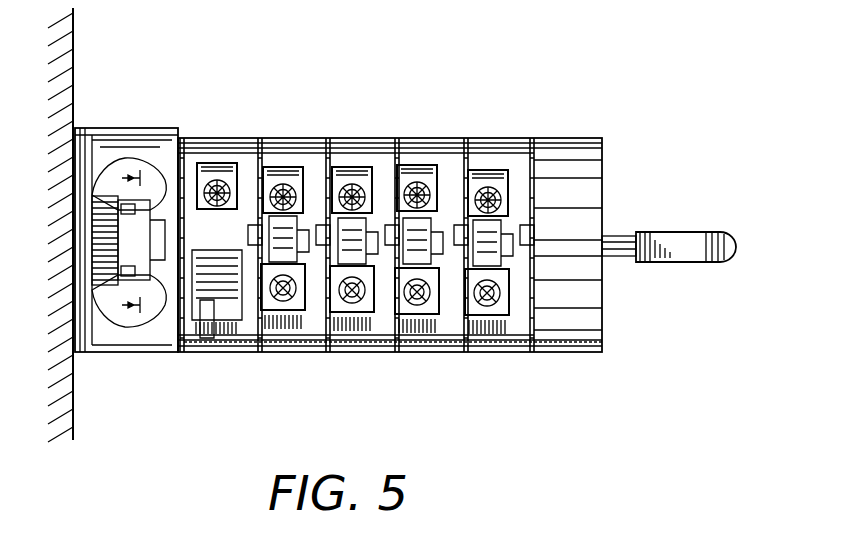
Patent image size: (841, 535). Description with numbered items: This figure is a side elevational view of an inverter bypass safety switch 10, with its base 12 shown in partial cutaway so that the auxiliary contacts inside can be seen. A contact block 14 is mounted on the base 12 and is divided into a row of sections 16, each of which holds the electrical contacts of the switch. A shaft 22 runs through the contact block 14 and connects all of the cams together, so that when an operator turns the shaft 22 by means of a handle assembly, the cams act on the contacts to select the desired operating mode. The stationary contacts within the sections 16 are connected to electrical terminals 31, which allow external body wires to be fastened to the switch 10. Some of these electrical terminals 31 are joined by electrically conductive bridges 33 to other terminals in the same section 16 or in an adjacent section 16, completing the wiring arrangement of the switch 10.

The inverter bypass safety switch 10 is at (332, 118).
The base 12 is at (118, 128).
The contact block 14 is at (232, 140).
The sections 16 is at (204, 350).
The shaft 22 is at (624, 236).
The electrical terminals 31 is at (160, 140).
The electrically conductive bridges 33 is at (388, 175).